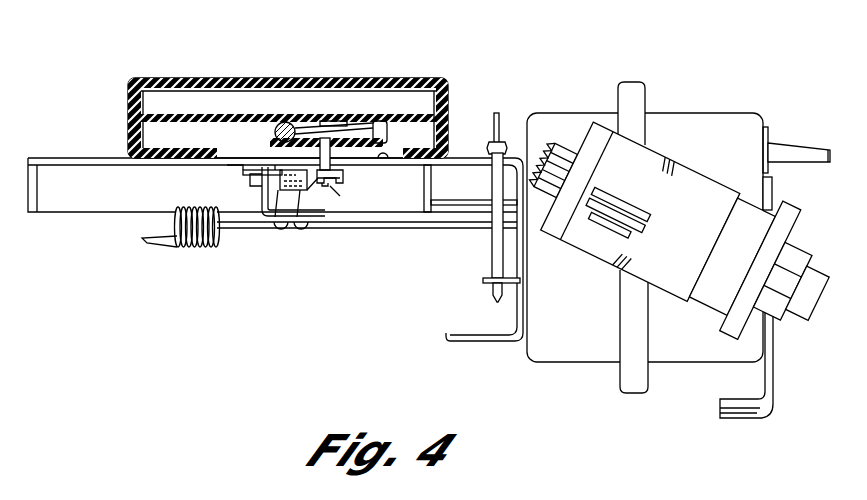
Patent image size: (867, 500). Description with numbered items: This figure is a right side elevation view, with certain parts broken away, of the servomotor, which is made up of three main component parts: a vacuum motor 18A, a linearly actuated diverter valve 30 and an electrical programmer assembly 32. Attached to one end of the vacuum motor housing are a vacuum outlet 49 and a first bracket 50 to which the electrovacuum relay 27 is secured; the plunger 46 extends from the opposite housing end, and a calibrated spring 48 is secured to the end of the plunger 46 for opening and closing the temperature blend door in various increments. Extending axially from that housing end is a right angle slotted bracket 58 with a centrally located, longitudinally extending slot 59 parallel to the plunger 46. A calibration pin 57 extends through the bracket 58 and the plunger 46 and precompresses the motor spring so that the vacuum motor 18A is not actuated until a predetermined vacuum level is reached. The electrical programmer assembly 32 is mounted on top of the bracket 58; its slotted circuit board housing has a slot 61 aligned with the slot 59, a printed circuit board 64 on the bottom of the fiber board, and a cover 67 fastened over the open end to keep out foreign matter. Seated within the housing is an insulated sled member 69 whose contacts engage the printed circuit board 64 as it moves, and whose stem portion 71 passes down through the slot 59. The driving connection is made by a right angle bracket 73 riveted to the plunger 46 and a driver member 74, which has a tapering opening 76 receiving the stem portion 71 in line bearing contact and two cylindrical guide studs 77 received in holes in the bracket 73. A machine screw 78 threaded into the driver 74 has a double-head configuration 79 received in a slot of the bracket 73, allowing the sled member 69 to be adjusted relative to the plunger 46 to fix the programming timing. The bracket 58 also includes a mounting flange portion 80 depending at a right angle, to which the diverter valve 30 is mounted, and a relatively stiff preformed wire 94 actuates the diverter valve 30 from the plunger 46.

The vacuum motor 18A is at (703, 102).
The electrovacuum relay 27 is at (694, 243).
The linearly actuated diverter valve 30 is at (60, 216).
The electrical programmer assembly 32 is at (196, 76).
The plunger 46 is at (367, 237).
The calibrated spring 48 is at (160, 248).
The vacuum outlet 49 is at (811, 144).
The first bracket 50 is at (775, 195).
The calibration pin 57 is at (490, 263).
The right angle slotted bracket 58 is at (457, 157).
The slot 59 is at (382, 160).
The slot 61 is at (128, 139).
The printed circuit board 64 is at (155, 121).
The cover 67 is at (395, 78).
The sled member 69 is at (384, 142).
The stem portion 71 is at (340, 197).
The right angle bracket 73 is at (260, 204).
The driver member 74 is at (317, 185).
The tapering opening 76 is at (348, 175).
The cylindrical guide studs 77 is at (243, 172).
The machine screw 78 is at (282, 203).
The double-head configuration 79 is at (254, 186).
The mounting flange portion 80 is at (446, 204).
The preformed wire 94 is at (505, 187).